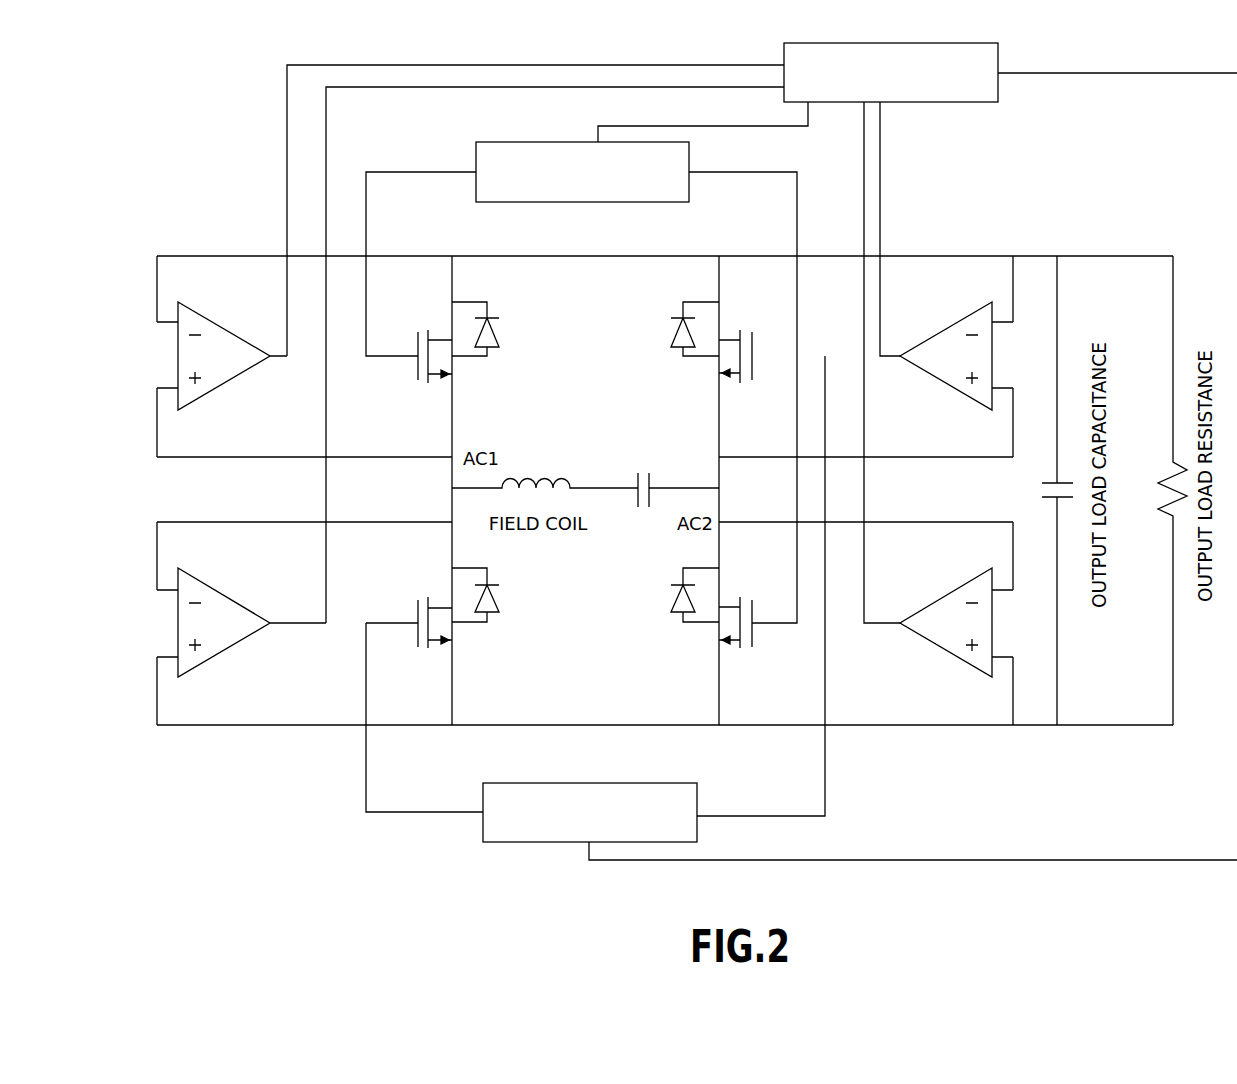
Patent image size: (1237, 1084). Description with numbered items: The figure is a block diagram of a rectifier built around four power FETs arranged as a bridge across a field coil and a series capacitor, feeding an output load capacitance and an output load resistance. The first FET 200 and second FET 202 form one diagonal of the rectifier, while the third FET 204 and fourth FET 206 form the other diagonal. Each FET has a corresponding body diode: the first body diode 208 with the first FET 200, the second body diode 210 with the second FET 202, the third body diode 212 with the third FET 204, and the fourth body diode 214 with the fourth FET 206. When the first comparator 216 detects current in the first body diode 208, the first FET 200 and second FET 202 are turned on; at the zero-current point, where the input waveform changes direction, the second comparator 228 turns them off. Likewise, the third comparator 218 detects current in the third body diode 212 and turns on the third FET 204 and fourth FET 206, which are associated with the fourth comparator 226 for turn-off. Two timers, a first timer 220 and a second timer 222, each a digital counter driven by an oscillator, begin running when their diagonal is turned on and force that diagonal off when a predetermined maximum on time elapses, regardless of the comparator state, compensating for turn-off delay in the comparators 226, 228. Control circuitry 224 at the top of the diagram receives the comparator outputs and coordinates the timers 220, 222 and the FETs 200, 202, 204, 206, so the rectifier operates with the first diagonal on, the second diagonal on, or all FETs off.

The first FET 200 is at (432, 380).
The second FET 202 is at (740, 650).
The third FET 204 is at (755, 335).
The fourth FET 206 is at (432, 647).
The first body diode 208 is at (500, 338).
The second body diode 210 is at (670, 602).
The third body diode 212 is at (670, 340).
The fourth body diode 214 is at (500, 605).
The first comparator 216 is at (203, 395).
The third comparator 218 is at (952, 393).
The first timer 220 is at (615, 203).
The second timer 222 is at (627, 783).
The control circuitry 224 is at (937, 104).
The fourth comparator 226 is at (203, 665).
The second comparator 228 is at (950, 675).